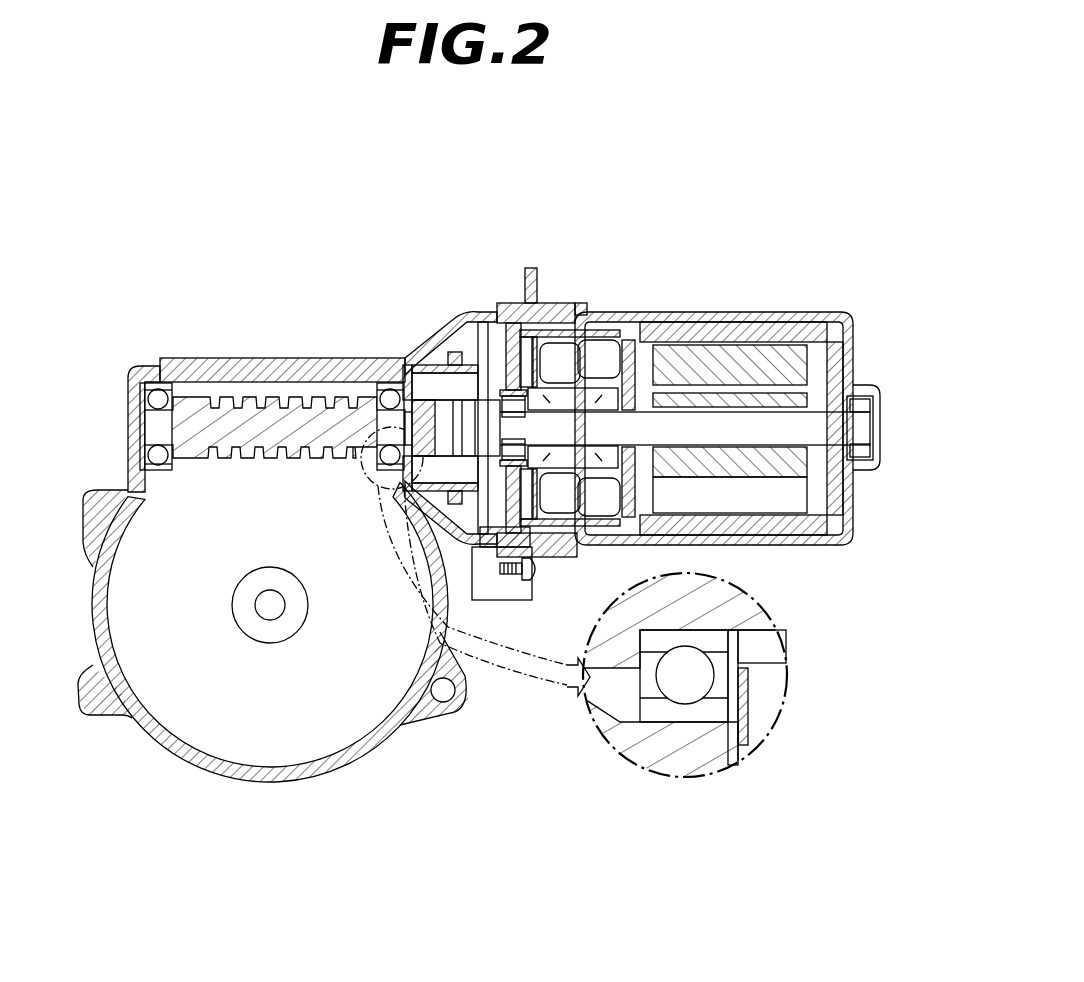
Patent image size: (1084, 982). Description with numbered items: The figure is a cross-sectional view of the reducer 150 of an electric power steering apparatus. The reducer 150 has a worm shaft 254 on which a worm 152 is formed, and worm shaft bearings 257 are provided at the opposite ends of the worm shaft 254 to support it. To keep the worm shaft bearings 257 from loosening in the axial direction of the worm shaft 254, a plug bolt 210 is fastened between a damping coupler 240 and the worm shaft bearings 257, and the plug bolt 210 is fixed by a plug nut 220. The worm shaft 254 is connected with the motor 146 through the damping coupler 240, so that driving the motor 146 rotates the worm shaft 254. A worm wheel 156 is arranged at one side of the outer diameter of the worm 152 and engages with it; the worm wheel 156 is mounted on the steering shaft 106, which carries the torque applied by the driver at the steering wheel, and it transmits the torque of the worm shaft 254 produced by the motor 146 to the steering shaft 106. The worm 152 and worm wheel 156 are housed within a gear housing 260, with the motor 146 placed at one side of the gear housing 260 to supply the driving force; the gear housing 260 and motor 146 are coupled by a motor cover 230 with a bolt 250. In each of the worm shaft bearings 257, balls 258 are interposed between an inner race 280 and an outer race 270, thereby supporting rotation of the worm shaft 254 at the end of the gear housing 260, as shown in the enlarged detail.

The steering shaft 106 is at (270, 612).
The motor 146 is at (678, 312).
The reducer 150 is at (625, 502).
The worm 152 is at (213, 398).
The worm wheel 156 is at (343, 728).
The plug bolt 210 is at (432, 362).
The plug nut 220 is at (455, 352).
The motor cover 230 is at (548, 300).
The damping coupler 240 is at (487, 560).
The bolt 250 is at (545, 572).
The worm shaft 254 is at (153, 428).
The worm shaft bearings 257 is at (158, 388).
The balls 258 is at (705, 680).
The gear housing 260 is at (268, 358).
The outer race 270 is at (722, 718).
The inner race 280 is at (722, 643).